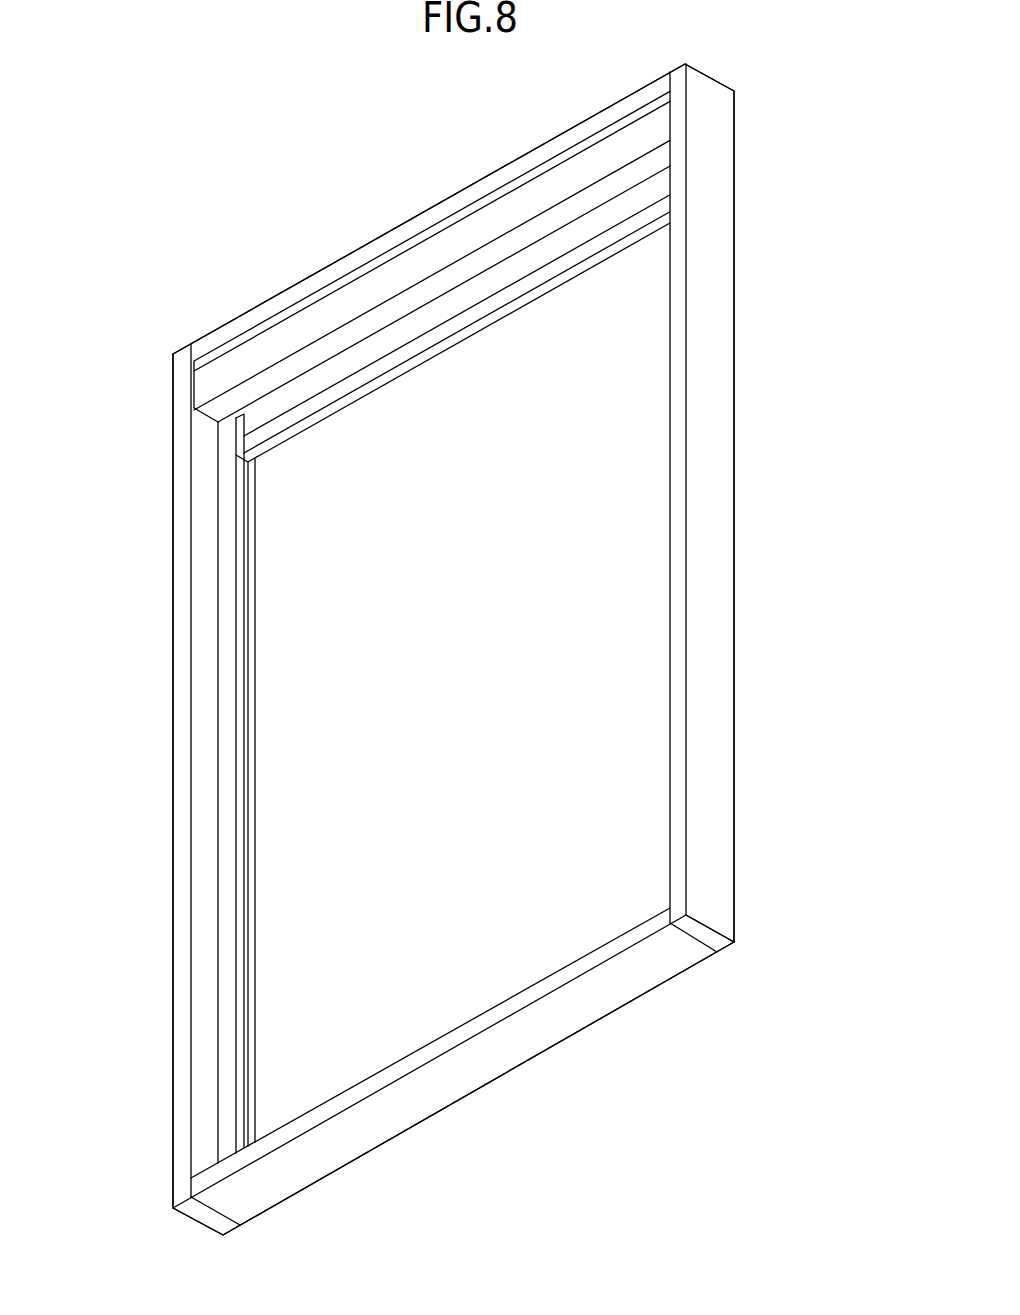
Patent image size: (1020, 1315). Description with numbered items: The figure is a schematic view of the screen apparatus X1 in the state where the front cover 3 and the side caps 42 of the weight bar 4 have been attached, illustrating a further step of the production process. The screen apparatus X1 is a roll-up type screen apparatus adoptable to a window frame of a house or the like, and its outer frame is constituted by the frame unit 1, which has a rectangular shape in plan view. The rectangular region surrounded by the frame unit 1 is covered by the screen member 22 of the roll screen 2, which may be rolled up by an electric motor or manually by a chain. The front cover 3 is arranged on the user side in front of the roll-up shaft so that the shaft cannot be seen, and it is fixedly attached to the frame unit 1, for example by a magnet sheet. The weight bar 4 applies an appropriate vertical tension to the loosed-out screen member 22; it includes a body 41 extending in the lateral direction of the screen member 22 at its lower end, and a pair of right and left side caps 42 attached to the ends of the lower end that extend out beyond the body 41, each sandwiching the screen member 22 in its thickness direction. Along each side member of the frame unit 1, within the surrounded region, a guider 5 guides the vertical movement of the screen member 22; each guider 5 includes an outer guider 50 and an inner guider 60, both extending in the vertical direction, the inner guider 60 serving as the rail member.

The screen apparatus X1 is at (778, 60).
The frame unit 1 is at (720, 268).
The roll screen 2 is at (432, 256).
The front cover 3 is at (317, 327).
The screen member 22 is at (403, 333).
The weight bar 4 is at (453, 670).
The body 41 is at (350, 402).
The side cap 42 is at (398, 525).
The guider 5 is at (145, 788).
The outer guider 50 is at (227, 600).
The inner guider 60 is at (240, 546).